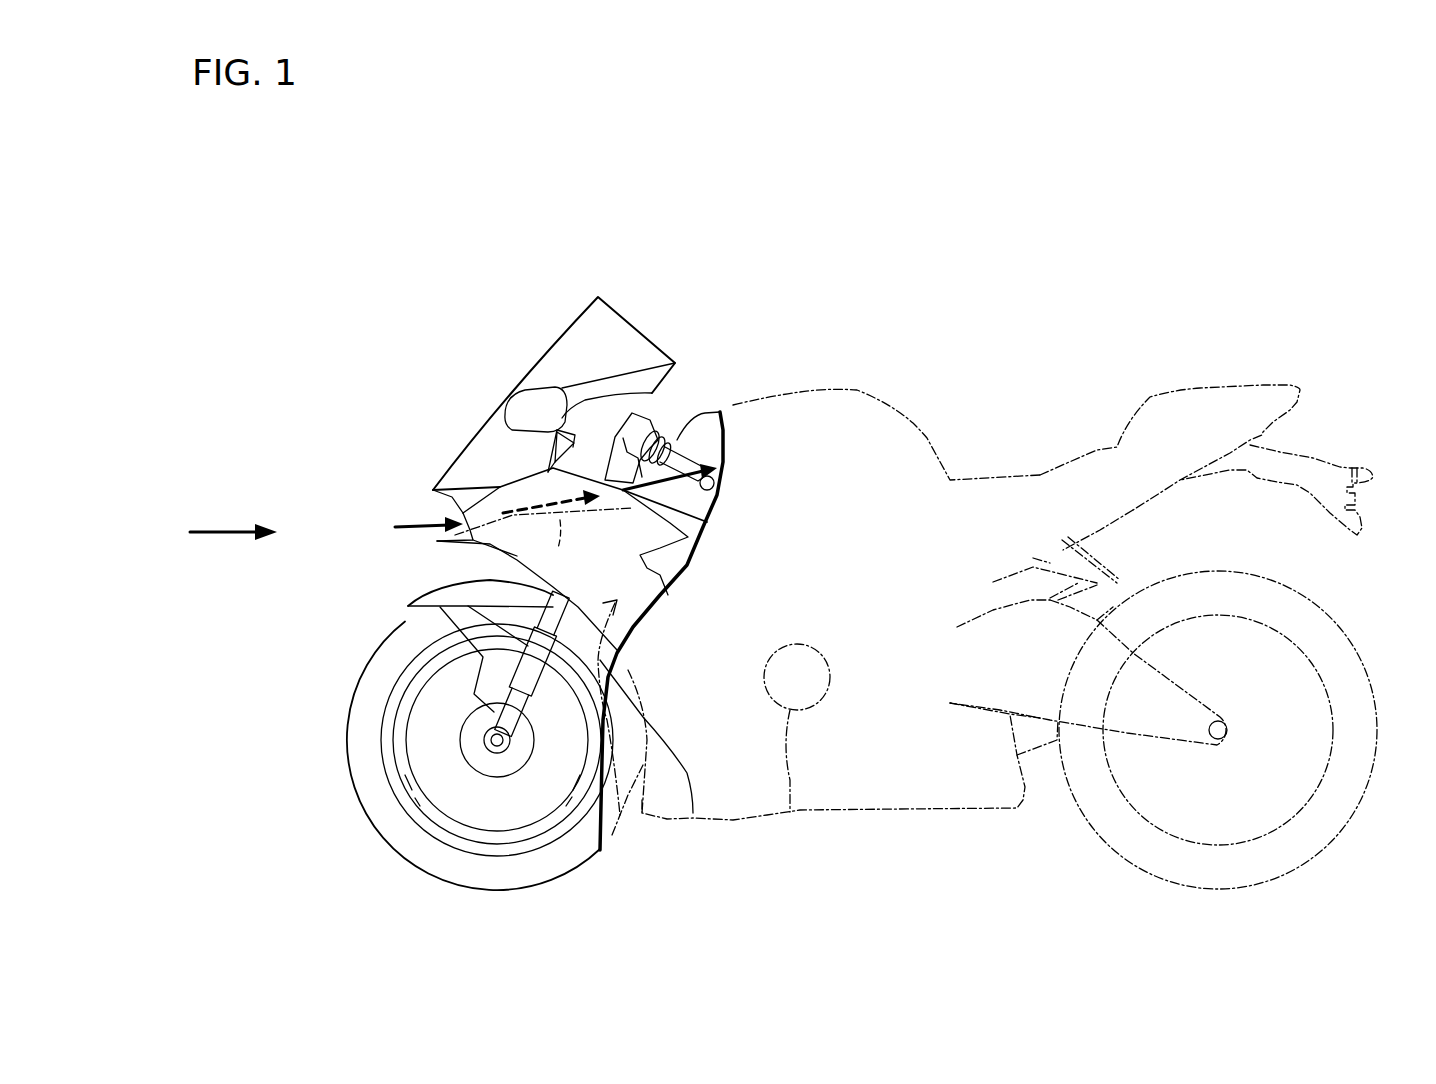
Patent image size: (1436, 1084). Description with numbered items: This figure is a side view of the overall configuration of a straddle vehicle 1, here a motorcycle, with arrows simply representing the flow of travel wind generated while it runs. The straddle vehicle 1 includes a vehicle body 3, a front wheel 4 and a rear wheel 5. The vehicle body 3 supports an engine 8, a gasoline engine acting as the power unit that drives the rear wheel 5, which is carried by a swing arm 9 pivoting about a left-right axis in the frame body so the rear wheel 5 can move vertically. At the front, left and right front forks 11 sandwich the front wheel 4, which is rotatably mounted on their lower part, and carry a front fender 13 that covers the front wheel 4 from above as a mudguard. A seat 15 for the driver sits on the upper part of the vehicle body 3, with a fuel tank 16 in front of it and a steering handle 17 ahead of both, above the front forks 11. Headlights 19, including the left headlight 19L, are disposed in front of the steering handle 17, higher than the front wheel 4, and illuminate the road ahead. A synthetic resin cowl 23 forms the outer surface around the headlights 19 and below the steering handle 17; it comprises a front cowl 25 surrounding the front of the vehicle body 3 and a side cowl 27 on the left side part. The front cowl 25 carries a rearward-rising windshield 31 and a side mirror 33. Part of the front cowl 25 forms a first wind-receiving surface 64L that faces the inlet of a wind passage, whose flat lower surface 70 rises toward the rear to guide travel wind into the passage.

The straddle vehicle 1 is at (277, 228).
The vehicle body 3 is at (915, 828).
The front wheel 4 is at (400, 838).
The rear wheel 5 is at (1330, 843).
The engine 8 is at (790, 813).
The swing arm 9 is at (1083, 815).
The front forks 11 is at (527, 672).
The front fender 13 is at (405, 590).
The seat 15 is at (1040, 475).
The fuel tank 16 is at (858, 390).
The steering handle 17 is at (687, 467).
The headlight 19 is at (366, 470).
The left headlight 19L is at (447, 510).
The cowl 23 is at (695, 813).
The front cowl 25 is at (456, 462).
The side cowl 27 is at (537, 490).
The windshield 31 is at (603, 317).
The side mirror 33 is at (532, 397).
The first wind-receiving surface 64L is at (440, 540).
The lower surface 70 is at (553, 548).